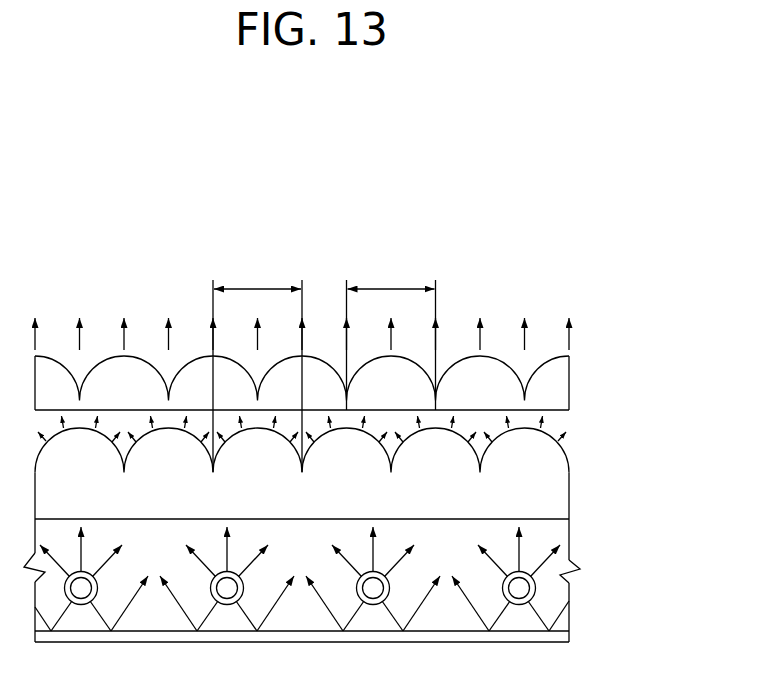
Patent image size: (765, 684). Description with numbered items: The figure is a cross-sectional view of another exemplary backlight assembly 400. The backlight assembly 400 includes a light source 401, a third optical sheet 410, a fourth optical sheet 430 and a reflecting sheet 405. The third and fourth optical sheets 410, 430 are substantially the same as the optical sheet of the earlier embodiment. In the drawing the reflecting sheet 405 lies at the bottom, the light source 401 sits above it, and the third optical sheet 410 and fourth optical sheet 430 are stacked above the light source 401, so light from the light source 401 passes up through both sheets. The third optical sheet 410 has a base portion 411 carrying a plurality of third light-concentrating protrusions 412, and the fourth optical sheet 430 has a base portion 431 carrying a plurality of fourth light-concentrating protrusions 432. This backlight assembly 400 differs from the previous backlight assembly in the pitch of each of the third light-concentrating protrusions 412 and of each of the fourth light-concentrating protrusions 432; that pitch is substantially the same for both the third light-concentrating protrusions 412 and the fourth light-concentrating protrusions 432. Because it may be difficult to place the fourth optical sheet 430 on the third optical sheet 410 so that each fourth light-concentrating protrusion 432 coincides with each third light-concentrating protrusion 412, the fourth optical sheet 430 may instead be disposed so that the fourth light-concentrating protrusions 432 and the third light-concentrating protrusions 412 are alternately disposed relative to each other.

The backlight assembly 400 is at (340, 203).
The light source 401 is at (537, 589).
The reflecting sheet 405 is at (555, 637).
The third optical sheet 410 is at (362, 535).
The base portion of light guide plate 411 is at (548, 499).
The third light-concentrating protrusions 412 is at (548, 459).
The fourth optical sheet 430 is at (368, 390).
The base portion of optical sheet 431 is at (548, 407).
The fourth light-concentrating protrusions 432 is at (548, 374).